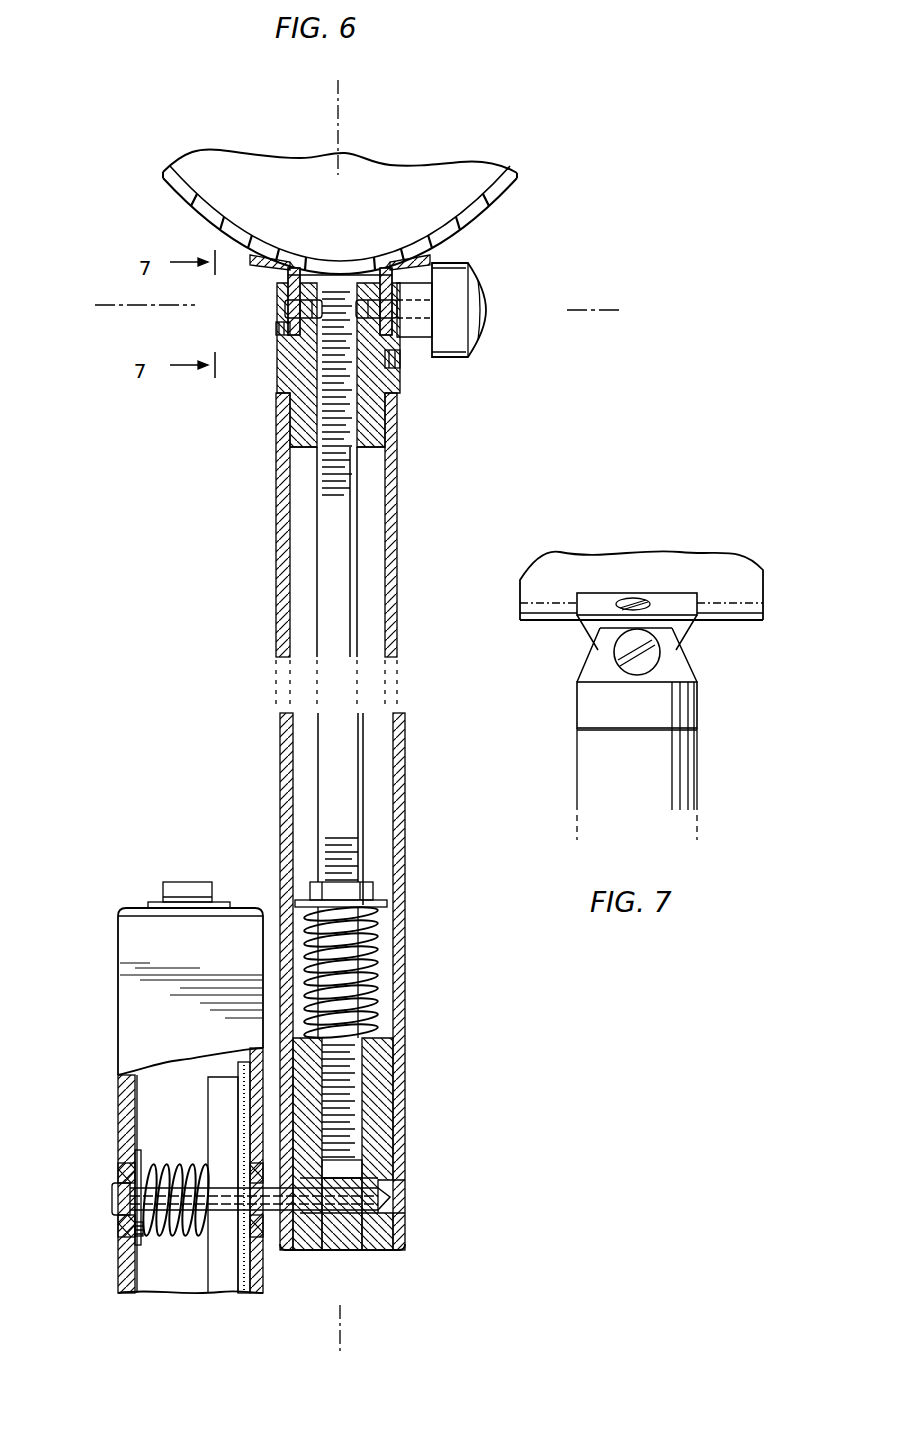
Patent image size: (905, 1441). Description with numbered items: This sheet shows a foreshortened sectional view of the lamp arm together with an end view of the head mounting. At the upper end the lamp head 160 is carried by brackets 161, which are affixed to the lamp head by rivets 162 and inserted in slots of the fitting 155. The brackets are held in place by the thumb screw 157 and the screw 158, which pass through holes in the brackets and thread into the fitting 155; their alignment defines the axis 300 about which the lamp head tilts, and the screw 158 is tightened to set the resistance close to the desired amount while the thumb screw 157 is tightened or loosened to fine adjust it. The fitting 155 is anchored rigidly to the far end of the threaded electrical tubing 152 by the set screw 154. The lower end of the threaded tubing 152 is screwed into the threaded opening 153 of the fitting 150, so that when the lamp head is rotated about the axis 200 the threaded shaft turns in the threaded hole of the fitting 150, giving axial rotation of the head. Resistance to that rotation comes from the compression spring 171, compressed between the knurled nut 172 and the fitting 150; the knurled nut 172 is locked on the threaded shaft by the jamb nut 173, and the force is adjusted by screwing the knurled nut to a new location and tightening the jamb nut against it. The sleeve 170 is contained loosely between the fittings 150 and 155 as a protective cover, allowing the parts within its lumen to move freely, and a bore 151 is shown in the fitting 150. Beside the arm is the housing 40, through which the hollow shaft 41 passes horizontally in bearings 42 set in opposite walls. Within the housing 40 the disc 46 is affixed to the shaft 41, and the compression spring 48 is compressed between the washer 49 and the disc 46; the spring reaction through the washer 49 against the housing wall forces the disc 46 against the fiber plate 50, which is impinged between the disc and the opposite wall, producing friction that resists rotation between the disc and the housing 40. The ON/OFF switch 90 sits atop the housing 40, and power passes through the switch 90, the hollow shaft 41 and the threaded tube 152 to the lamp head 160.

In FIG. 6, the axis 200 is at (345, 721).
In FIG. 6, the lamp head 160 is at (480, 222).
In FIG. 7, the lamp head 160 is at (568, 568).
In FIG. 6, the rivets 162 is at (262, 270).
In FIG. 7, the rivets 162 is at (637, 598).
In FIG. 6, the screw 158 is at (276, 332).
In FIG. 7, the screw 158 is at (645, 663).
In FIG. 6, the brackets 161 is at (288, 335).
In FIG. 7, the brackets 161 is at (685, 590).
In FIG. 6, the fitting 155 is at (295, 440).
In FIG. 7, the fitting 155 is at (577, 712).
In FIG. 6, the set screw 154 is at (400, 368).
In FIG. 6, the thumb screw 157 is at (486, 305).
In FIG. 6, the axis 300 is at (353, 313).
In FIG. 6, the sleeve 170 is at (280, 573).
In FIG. 7, the sleeve 170 is at (650, 790).
In FIG. 6, the threaded electrical tubing 152 is at (355, 836).
In FIG. 6, the jamb nut 173 is at (373, 884).
In FIG. 6, the knurled nut 172 is at (387, 903).
In FIG. 6, the compression spring 171 is at (380, 1005).
In FIG. 6, the threaded opening 153 is at (352, 1170).
In FIG. 6, the fitting 150 is at (385, 1252).
In FIG. 6, the bolt bore 151 is at (318, 1205).
In FIG. 6, the ON/OFF switch 90 is at (185, 890).
In FIG. 6, the housing 40 is at (130, 1130).
In FIG. 6, the washer 49 is at (135, 1158).
In FIG. 6, the hollow shaft 41 is at (125, 1205).
In FIG. 6, the bearings 42 is at (120, 1232).
In FIG. 6, the compression spring 48 is at (152, 1240).
In FIG. 6, the disc 46 is at (228, 1283).
In FIG. 6, the fiber plate 50 is at (245, 1290).